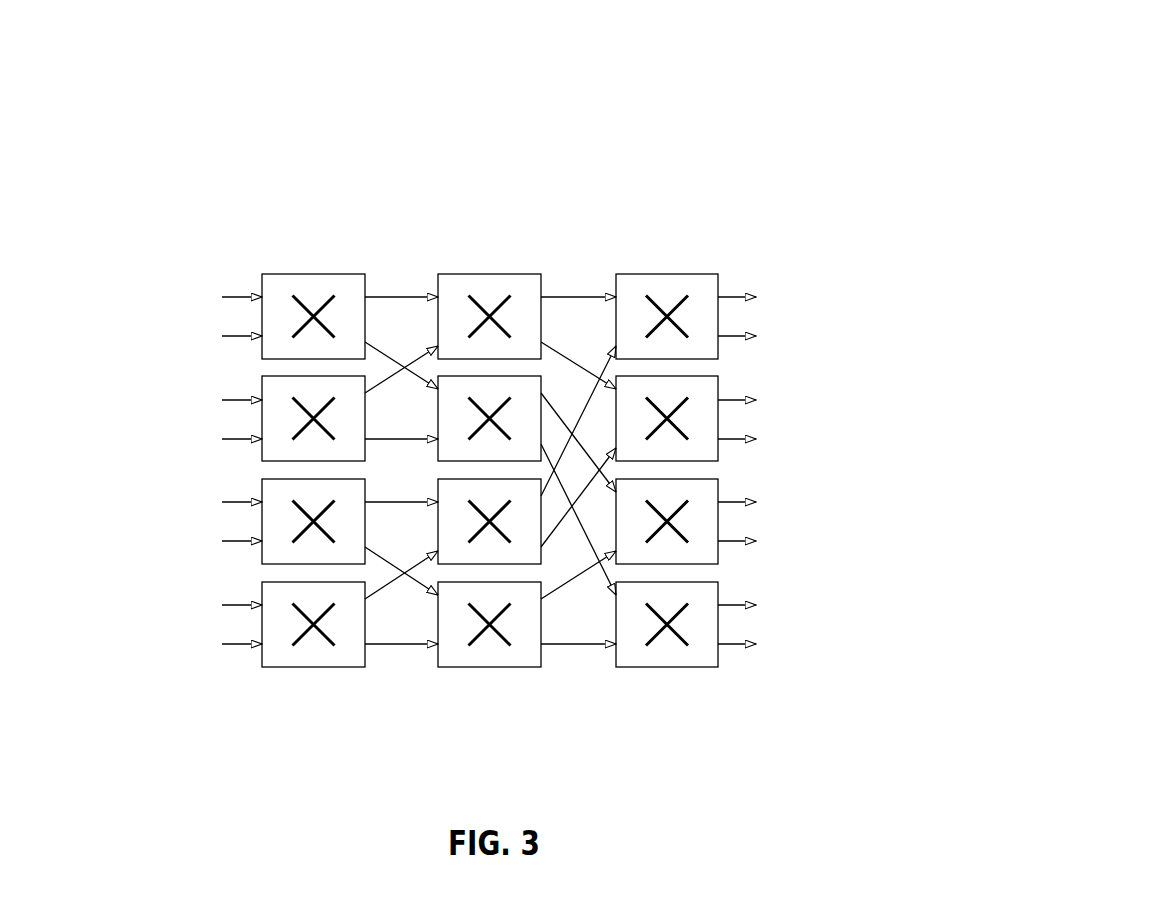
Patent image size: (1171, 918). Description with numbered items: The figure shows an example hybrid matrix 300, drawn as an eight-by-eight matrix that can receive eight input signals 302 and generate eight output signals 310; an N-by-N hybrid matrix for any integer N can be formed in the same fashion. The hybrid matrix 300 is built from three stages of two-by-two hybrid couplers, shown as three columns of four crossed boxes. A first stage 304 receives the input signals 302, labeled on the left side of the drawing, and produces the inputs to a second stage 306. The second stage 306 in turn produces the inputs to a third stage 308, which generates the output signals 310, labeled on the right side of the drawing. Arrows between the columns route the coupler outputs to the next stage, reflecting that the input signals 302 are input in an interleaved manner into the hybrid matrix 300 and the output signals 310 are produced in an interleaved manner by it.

The hybrid matrix 300 is at (1147, 60).
The input signals 302 is at (227, 267).
The first stage 304 is at (307, 262).
The second stage 306 is at (487, 262).
The third stage 308 is at (664, 262).
The output signals 310 is at (739, 275).